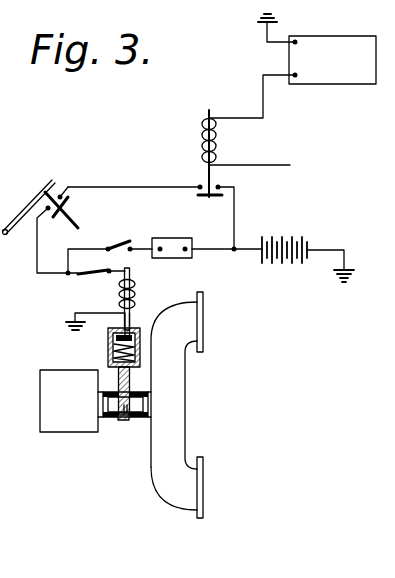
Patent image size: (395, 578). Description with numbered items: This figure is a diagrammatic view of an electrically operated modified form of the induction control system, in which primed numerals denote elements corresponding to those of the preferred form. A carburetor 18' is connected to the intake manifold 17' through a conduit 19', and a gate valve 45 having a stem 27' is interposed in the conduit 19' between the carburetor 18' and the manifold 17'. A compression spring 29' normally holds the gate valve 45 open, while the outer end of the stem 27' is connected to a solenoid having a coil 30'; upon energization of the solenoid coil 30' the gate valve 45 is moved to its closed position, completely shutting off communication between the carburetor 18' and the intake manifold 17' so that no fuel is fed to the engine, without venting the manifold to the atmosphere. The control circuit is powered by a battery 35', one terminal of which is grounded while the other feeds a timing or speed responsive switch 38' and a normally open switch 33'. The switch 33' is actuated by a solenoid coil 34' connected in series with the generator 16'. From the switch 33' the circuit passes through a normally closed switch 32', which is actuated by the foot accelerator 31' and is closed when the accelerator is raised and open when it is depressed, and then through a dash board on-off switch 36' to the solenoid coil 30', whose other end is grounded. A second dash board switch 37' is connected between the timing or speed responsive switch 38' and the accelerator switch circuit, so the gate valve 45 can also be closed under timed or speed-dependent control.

The generator 16' is at (292, 66).
The solenoid coil 34' is at (227, 153).
The normally open switch 33' is at (151, 217).
The timing or speed responsive switch 38' is at (183, 238).
The dash board switch 37' is at (100, 245).
The dash board switch 36' is at (93, 287).
The foot accelerator 31' is at (29, 207).
The normally closed switch 32' is at (71, 230).
The battery 35' is at (294, 251).
The solenoid coil 30' is at (119, 299).
The stem 27' is at (143, 322).
The compression spring 29' is at (105, 347).
The gate valve 45 is at (131, 379).
The conduit 19' is at (124, 426).
The carburetor 18' is at (52, 401).
The intake manifold 17' is at (177, 402).